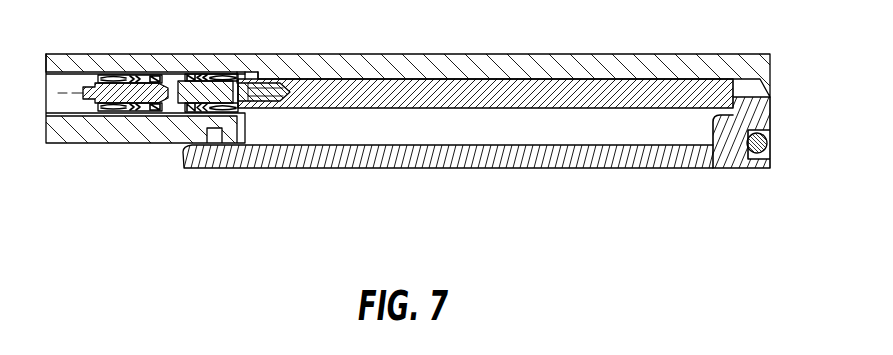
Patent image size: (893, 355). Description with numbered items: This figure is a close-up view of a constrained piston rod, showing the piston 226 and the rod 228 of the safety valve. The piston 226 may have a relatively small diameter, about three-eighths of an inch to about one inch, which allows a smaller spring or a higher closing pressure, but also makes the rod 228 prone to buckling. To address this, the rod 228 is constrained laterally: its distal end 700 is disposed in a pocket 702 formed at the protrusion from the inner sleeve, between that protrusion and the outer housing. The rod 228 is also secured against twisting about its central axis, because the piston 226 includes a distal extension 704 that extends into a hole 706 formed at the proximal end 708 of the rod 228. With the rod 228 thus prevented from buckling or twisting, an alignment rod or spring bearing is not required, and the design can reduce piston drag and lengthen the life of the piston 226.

The distal end 700 is at (718, 83).
The pocket 702 is at (730, 93).
The rod 228 is at (406, 91).
The proximal end 708 is at (276, 81).
The hole 706 is at (276, 101).
The distal extension 704 is at (232, 110).
The piston 226 is at (174, 104).